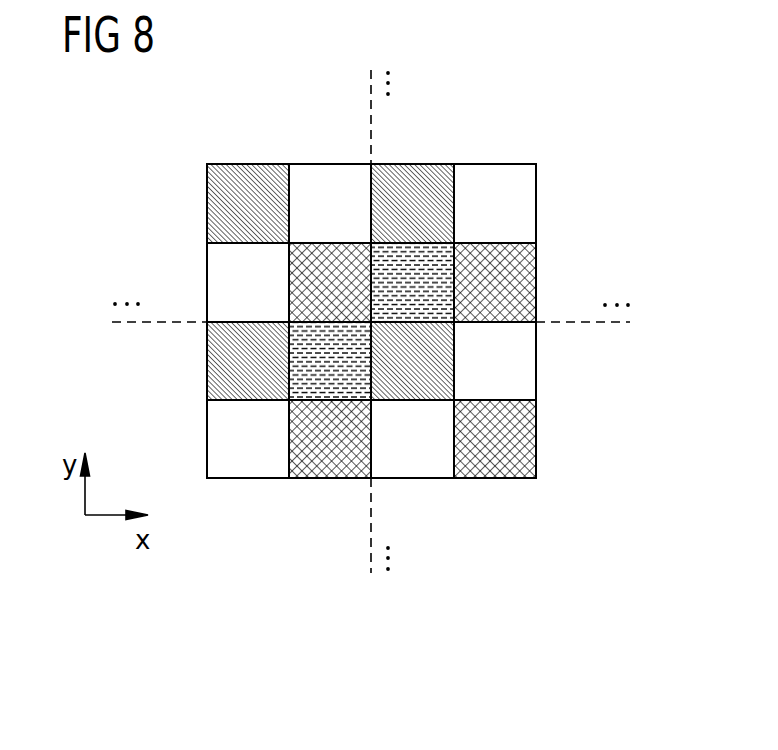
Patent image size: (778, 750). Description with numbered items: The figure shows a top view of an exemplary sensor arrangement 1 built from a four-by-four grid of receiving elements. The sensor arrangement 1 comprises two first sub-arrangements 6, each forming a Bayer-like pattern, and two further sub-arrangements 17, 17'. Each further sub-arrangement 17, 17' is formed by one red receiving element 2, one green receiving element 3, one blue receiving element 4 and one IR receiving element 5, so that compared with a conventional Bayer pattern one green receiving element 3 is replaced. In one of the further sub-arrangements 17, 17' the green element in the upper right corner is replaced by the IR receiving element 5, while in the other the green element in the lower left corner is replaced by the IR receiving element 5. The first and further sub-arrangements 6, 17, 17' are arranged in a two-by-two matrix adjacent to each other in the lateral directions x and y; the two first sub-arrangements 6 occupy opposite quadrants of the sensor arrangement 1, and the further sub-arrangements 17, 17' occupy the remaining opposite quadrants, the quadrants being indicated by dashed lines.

The sensor arrangement 1 is at (526, 128).
The red receiving element 2 is at (250, 176).
The green receiving element 3 is at (331, 176).
The blue receiving element 4 is at (501, 462).
The IR receiving element 5 is at (333, 380).
The first sub-arrangement 6 is at (207, 200).
The further sub-arrangement 17 is at (213, 439).
The further sub-arrangement 17' is at (539, 203).